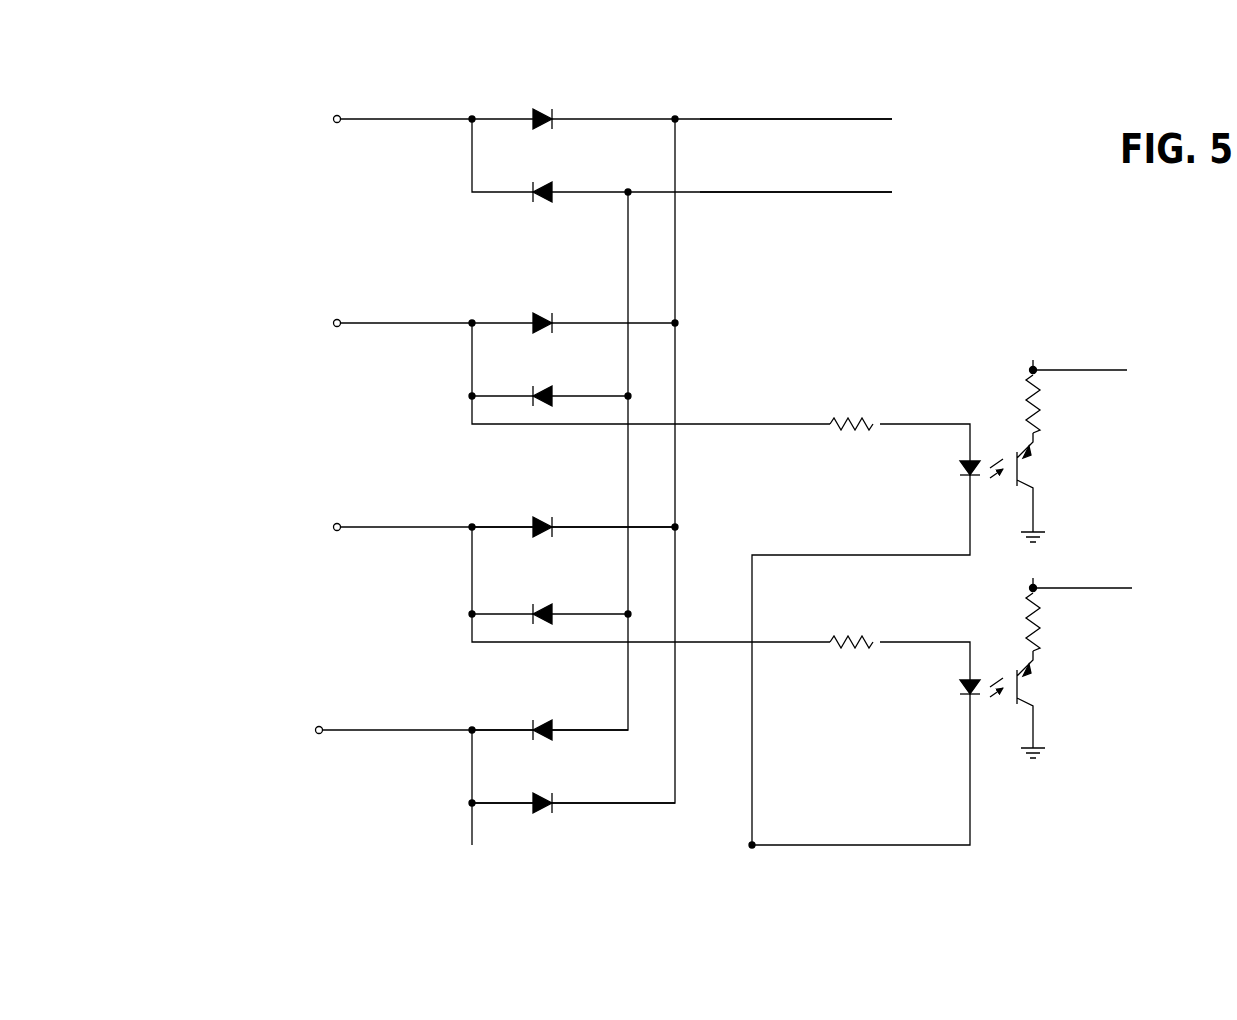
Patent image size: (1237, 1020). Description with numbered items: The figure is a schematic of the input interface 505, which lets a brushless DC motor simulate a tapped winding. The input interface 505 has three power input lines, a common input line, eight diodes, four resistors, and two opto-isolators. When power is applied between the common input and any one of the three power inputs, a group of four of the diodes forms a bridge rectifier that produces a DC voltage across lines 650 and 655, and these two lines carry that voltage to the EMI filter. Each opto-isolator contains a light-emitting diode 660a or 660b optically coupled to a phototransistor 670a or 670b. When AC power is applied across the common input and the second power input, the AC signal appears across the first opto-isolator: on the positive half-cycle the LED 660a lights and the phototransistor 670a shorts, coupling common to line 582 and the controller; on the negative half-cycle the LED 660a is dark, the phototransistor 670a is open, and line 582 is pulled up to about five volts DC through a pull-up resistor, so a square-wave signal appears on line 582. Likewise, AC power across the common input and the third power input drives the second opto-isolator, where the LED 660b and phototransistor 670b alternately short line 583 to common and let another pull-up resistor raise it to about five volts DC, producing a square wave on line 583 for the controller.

The input interface 505 is at (224, 158).
The line 650 is at (813, 119).
The line 655 is at (849, 192).
The line 582 is at (1100, 370).
The line 583 is at (1103, 588).
The light-emitting-diode 660a is at (958, 460).
The light-emitting-diode 660b is at (960, 688).
The phototransistor 670a is at (1020, 463).
The phototransistor 670b is at (1022, 687).